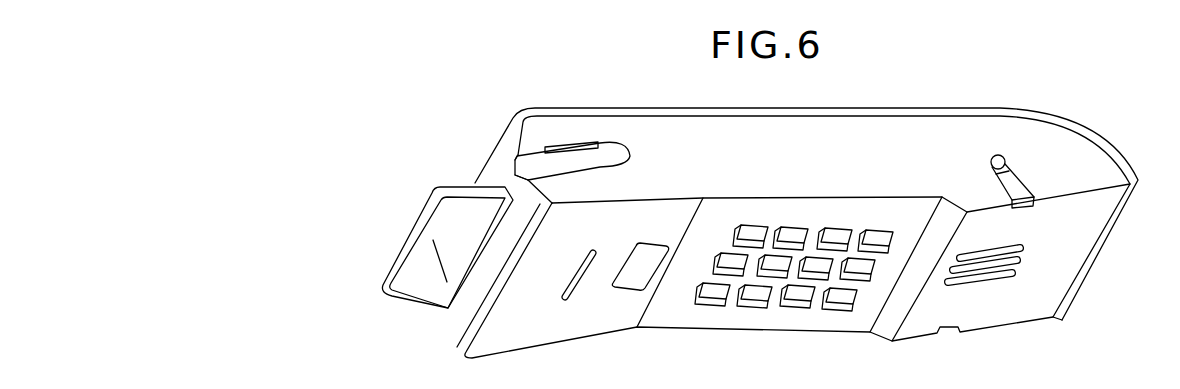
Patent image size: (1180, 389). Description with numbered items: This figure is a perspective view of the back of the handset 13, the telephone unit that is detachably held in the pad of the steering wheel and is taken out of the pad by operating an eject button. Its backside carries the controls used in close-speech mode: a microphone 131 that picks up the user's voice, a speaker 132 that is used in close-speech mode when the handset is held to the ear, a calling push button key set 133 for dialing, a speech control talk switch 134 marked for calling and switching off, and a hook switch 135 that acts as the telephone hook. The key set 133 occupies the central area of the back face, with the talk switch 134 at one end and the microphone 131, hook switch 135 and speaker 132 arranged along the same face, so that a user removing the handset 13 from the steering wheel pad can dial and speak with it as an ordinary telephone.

The handset 13 is at (1017, 112).
The microphone 131 is at (566, 300).
The speaker 132 is at (988, 288).
The calling push button key set 133 is at (786, 311).
The speech control talk switch 134 is at (448, 186).
The hook switch 135 is at (628, 293).